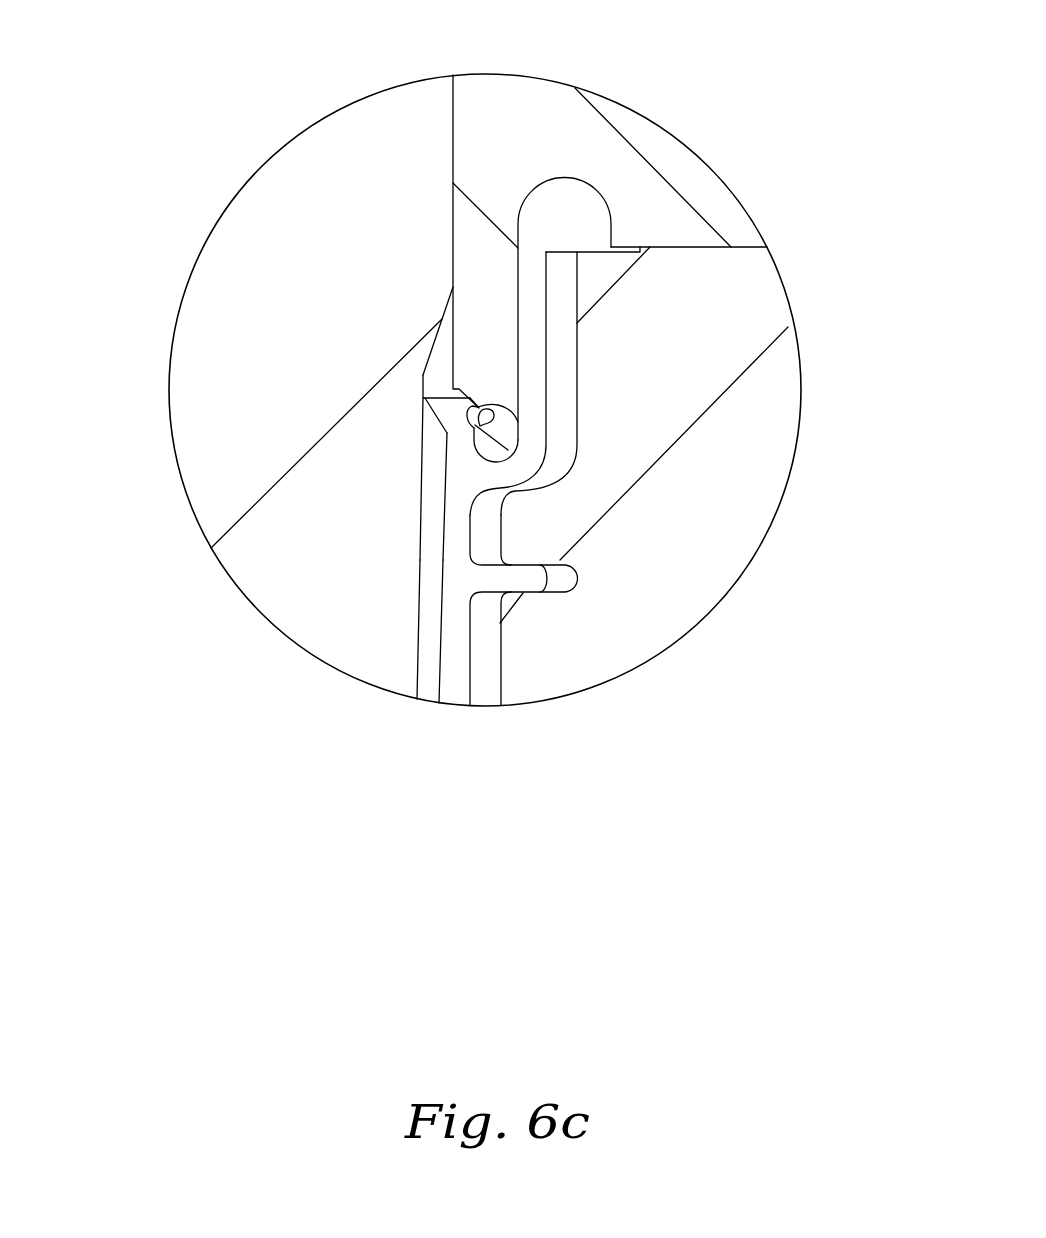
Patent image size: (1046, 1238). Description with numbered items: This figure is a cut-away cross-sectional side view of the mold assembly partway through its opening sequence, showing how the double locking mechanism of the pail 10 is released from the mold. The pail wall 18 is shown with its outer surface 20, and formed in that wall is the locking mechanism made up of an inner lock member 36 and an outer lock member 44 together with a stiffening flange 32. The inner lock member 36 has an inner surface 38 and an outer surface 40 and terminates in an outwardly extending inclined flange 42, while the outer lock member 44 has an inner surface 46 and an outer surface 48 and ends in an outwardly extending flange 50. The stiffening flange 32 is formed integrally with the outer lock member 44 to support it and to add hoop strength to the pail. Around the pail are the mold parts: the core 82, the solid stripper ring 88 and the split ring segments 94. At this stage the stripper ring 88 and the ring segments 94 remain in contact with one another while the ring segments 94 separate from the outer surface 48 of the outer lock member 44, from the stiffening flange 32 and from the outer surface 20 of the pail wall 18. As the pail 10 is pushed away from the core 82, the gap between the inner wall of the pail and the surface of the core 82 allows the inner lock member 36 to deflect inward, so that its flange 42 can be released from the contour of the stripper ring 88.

The core 82 is at (302, 300).
The inner surface 46 is at (513, 307).
The outwardly extending flange 50 is at (592, 183).
The solid stripper ring 88 is at (638, 207).
The outer surface 48 is at (546, 353).
The outer lock member 44 is at (547, 413).
The outer surface 40 is at (500, 406).
The split ring segments 94 is at (678, 558).
The stiffening flange 32 is at (503, 597).
The wall 18 is at (470, 662).
The outer surface 20 is at (470, 693).
The pail 10 is at (440, 640).
The inner surface 38 is at (448, 435).
The inner lock member 36 is at (440, 421).
The outwardly extending inclined flange 42 is at (452, 396).